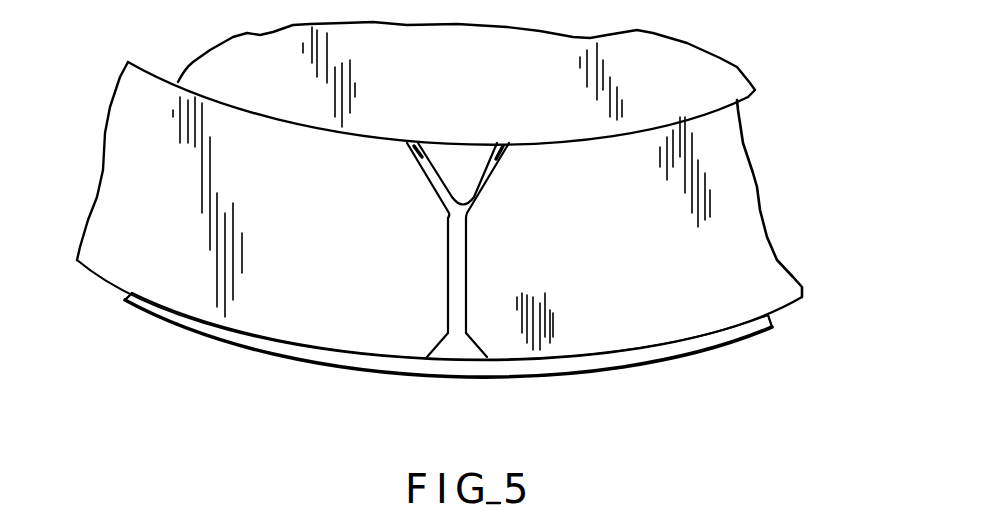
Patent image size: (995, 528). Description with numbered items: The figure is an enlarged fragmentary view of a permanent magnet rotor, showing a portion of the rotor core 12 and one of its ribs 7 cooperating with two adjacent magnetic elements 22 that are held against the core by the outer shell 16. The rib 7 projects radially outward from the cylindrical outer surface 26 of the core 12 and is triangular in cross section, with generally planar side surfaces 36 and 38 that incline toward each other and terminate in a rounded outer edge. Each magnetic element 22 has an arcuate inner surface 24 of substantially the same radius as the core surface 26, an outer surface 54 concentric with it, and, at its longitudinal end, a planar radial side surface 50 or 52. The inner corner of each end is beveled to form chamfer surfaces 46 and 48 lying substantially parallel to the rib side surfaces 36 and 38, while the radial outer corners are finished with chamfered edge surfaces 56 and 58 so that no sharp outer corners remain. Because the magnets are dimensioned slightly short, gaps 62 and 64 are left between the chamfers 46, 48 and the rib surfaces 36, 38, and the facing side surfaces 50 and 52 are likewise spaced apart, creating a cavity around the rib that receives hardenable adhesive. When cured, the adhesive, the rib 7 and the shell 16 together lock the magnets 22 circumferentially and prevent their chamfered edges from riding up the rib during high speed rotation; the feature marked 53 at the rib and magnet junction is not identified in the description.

The rib 7 is at (462, 182).
The rotor core 12 is at (653, 47).
The outer shell 16 is at (620, 358).
The magnetic element 22 is at (248, 300).
The arcuate inner surface 24 is at (160, 78).
The outer surface 26 is at (750, 91).
The planar side surface 36 is at (475, 188).
The planar side surface 38 is at (440, 188).
The chamfer surface 46 is at (489, 167).
The chamfer surface 48 is at (426, 169).
The radial side surface 50 is at (467, 270).
The radial side surface 52 is at (448, 270).
The arm-stem junction 53 is at (448, 220).
The outer surface 54 is at (104, 279).
The chamfered edge surface 56 is at (482, 352).
The chamfered edge surface 58 is at (433, 350).
The gap 62 is at (503, 143).
The gap 64 is at (418, 143).